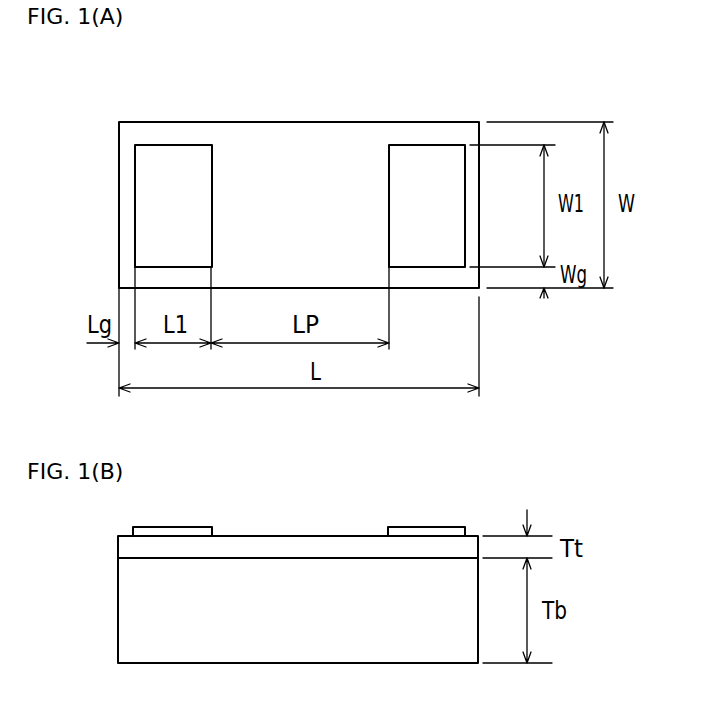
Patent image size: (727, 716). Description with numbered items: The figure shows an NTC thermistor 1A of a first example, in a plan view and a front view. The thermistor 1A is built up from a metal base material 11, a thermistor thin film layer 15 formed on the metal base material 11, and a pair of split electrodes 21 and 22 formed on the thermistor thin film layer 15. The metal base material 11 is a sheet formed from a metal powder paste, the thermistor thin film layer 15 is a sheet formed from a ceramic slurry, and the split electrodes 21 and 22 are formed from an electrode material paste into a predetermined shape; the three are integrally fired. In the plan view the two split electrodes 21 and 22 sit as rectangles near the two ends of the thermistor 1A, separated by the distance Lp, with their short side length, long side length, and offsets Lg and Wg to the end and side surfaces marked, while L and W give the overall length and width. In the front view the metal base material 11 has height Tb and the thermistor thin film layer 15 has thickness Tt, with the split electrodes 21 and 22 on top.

In FIG. 1A, the NTC thermistor 1A is at (520, 69).
In FIG. 1B, the NTC thermistor 1A is at (88, 592).
In FIG. 1A, the metal base material 11 is at (305, 140).
In FIG. 1B, the metal base material 11 is at (250, 640).
In FIG. 1B, the thermistor thin film layer 15 is at (312, 534).
In FIG. 1A, the split electrode 21 is at (177, 162).
In FIG. 1B, the split electrode 21 is at (172, 525).
In FIG. 1A, the split electrode 22 is at (423, 157).
In FIG. 1B, the split electrode 22 is at (428, 525).